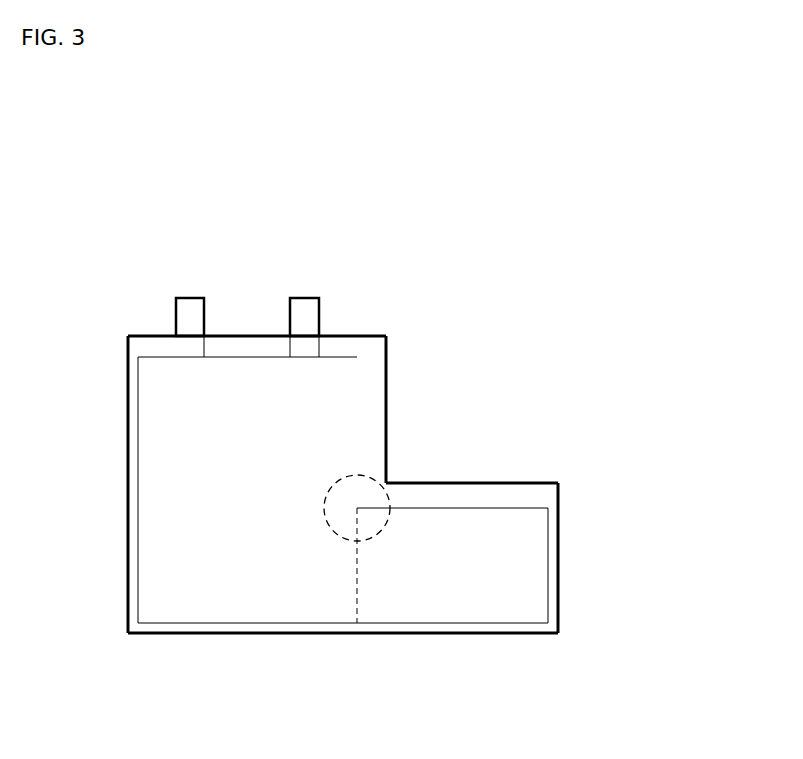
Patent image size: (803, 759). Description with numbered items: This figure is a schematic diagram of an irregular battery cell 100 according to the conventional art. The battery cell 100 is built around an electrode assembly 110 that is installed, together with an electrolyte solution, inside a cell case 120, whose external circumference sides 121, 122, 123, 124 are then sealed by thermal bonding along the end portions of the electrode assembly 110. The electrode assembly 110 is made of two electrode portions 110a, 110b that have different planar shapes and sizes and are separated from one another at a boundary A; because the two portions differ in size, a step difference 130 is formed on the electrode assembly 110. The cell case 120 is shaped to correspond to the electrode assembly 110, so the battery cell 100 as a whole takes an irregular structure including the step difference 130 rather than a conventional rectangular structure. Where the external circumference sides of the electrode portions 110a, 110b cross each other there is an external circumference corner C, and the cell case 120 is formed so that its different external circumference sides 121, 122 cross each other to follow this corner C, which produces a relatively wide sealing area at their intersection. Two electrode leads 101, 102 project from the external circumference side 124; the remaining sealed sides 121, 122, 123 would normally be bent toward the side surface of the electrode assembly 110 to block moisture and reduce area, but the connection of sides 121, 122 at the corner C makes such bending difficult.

The battery cell 100 is at (351, 171).
The electrode lead 101 is at (188, 299).
The electrode lead 102 is at (304, 299).
The electrode assembly 110 is at (343, 554).
The electrode portion 110a is at (283, 610).
The electrode portion 110b is at (452, 610).
The cell case 120 is at (366, 442).
The external circumference side 121 is at (530, 482).
The external circumference side 122 is at (386, 375).
The external circumference side 123 is at (128, 470).
The external circumference side 124 is at (348, 336).
The step difference 130 is at (466, 435).
The boundary A is at (357, 576).
The external circumference corner C is at (365, 477).